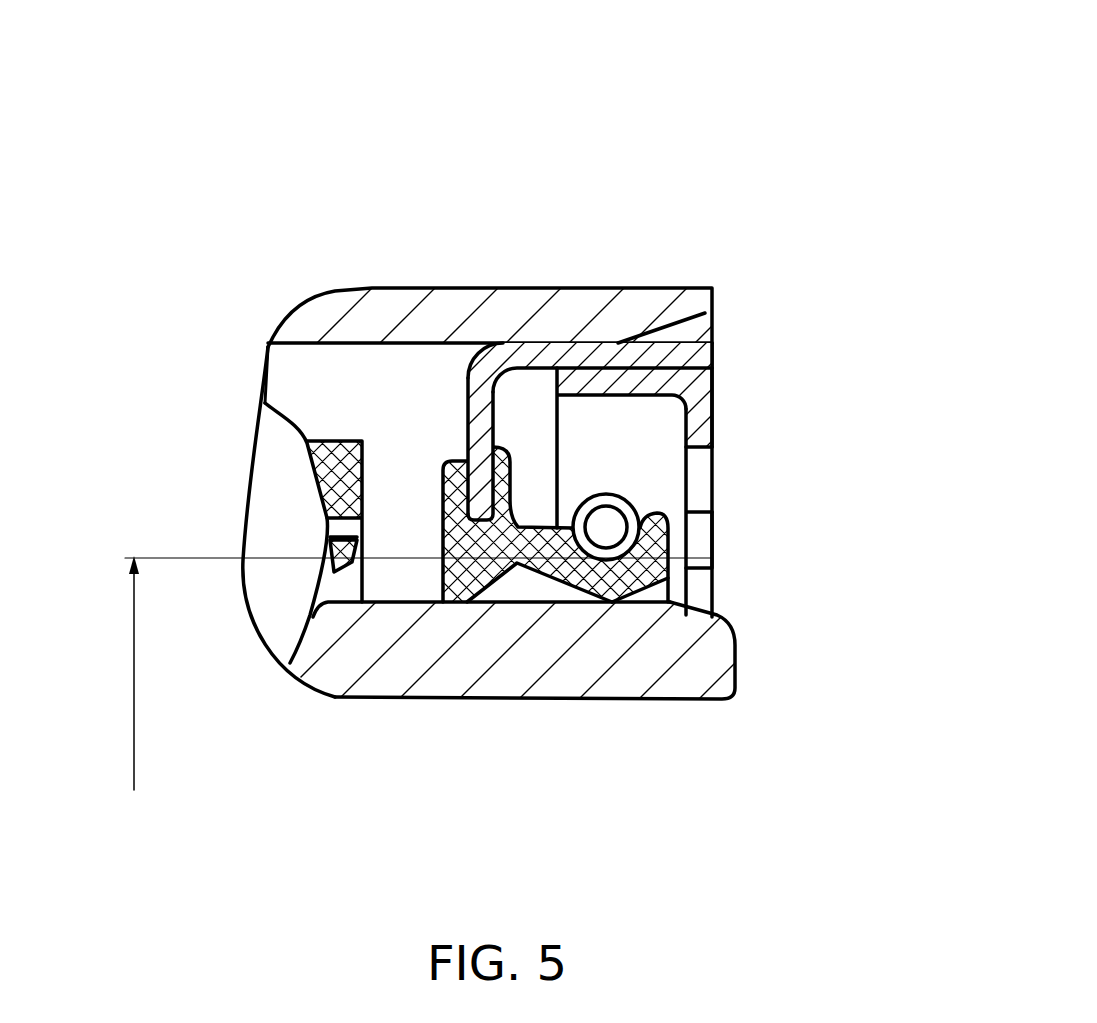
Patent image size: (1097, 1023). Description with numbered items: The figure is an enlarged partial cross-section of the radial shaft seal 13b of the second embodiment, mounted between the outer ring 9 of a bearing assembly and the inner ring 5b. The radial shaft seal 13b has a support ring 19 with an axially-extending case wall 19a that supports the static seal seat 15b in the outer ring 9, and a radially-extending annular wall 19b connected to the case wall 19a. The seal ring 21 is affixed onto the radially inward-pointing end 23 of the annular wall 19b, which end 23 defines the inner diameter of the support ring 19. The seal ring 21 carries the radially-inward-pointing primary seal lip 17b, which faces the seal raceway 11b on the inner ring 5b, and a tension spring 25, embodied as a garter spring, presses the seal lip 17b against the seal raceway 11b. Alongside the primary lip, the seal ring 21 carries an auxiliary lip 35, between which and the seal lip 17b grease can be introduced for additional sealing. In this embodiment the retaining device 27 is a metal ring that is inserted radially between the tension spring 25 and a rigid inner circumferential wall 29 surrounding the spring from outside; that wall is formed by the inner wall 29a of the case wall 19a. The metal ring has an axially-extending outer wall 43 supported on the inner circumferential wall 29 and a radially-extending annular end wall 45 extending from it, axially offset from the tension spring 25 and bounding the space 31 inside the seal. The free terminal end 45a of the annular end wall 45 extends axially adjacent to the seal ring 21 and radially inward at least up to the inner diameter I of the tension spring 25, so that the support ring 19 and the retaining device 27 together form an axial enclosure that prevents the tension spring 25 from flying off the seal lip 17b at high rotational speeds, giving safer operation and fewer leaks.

The inner ring 5b is at (477, 712).
The outer ring 9 is at (584, 293).
The seal raceway 11b is at (407, 601).
The radial shaft seal 13b is at (524, 408).
The seal seat 15b is at (266, 347).
The seal lip 17b is at (620, 603).
The support ring 19 is at (493, 338).
The case wall 19a is at (530, 345).
The annular wall 19b is at (470, 422).
The seal ring 21 is at (498, 624).
The end 23 is at (470, 483).
The tension spring 25 is at (632, 527).
The retaining device 27 is at (721, 349).
The inner circumferential wall 29 is at (743, 366).
The inner wall 29a is at (717, 377).
The space 31 is at (604, 459).
The auxiliary lip 35 is at (457, 585).
The outer wall 43 is at (632, 377).
The annular end wall 45 is at (758, 524).
The terminal end 45a is at (703, 567).
The inner diameter I is at (137, 740).